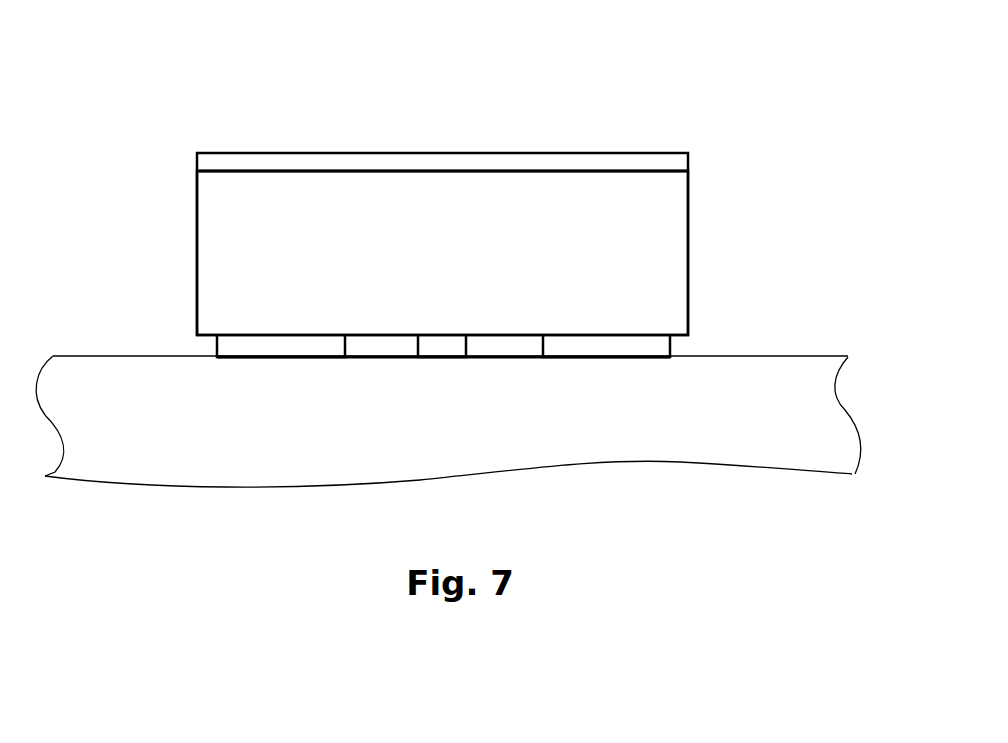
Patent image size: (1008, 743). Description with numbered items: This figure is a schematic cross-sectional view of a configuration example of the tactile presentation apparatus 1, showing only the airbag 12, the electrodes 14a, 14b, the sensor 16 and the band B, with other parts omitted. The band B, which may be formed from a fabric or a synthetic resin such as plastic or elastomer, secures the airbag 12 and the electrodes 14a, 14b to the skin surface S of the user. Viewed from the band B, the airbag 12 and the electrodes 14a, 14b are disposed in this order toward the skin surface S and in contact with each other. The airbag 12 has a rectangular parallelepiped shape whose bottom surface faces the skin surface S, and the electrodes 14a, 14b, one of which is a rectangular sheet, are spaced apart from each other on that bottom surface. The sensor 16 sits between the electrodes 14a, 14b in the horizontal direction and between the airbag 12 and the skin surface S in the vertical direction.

The tactile presentation apparatus 1 is at (655, 92).
The band B is at (458, 163).
The airbag 12 is at (687, 278).
The electrode 14a is at (236, 352).
The electrode 14b is at (655, 352).
The sensor 16 is at (451, 352).
The skin surface S is at (810, 372).